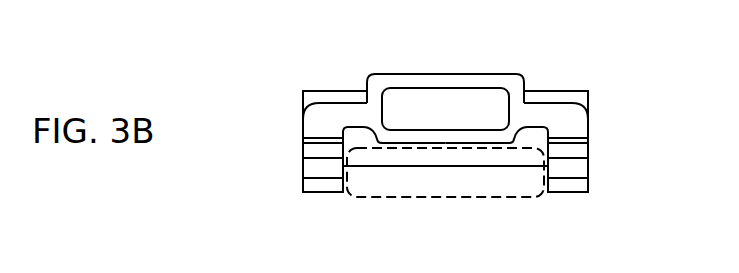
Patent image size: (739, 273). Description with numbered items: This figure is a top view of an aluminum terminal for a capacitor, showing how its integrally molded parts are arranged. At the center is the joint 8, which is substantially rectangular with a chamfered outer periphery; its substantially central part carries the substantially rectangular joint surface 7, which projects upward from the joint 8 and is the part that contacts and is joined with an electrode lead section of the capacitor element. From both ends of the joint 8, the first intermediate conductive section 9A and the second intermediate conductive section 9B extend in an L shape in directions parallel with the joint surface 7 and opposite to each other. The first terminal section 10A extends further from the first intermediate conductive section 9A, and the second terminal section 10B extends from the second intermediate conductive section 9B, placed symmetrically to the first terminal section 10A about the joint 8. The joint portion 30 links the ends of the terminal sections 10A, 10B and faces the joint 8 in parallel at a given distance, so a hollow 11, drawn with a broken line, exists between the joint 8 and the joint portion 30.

The joint portion 30 is at (318, 96).
The second intermediate conductive section 9B is at (337, 115).
The joint surface 7 is at (423, 95).
The joint 8 is at (508, 82).
The first intermediate conductive section 9A is at (570, 108).
The second terminal section 10B is at (322, 168).
The first terminal section 10A is at (583, 151).
The hollow 11 is at (442, 198).